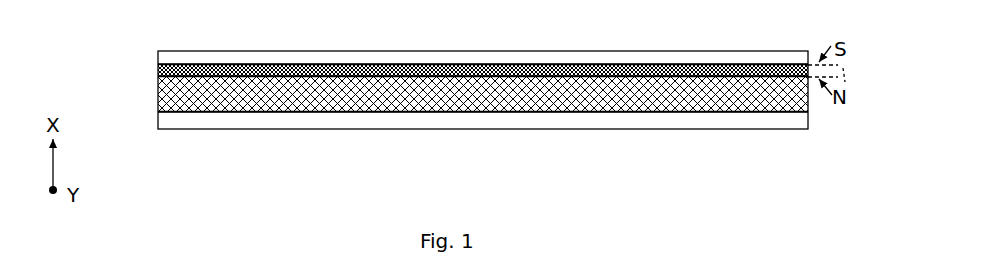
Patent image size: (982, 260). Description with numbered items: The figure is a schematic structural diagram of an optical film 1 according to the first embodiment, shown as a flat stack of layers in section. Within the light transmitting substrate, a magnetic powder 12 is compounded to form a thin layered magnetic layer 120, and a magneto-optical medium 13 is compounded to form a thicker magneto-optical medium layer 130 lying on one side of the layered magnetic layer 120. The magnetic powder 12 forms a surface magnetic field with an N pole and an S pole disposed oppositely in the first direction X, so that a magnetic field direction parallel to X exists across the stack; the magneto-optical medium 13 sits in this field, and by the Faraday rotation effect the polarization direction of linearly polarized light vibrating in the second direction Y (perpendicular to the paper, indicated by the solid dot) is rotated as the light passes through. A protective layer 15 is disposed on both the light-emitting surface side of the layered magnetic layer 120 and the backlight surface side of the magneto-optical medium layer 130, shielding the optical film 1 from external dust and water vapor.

The optical film 1 is at (465, 38).
The protective layer 15 is at (156, 52).
The magnetic powder 12 is at (291, 72).
The magneto-optical medium 13 is at (399, 89).
The layered magnetic layer 120 is at (156, 71).
The magneto-optical medium layer 130 is at (156, 94).